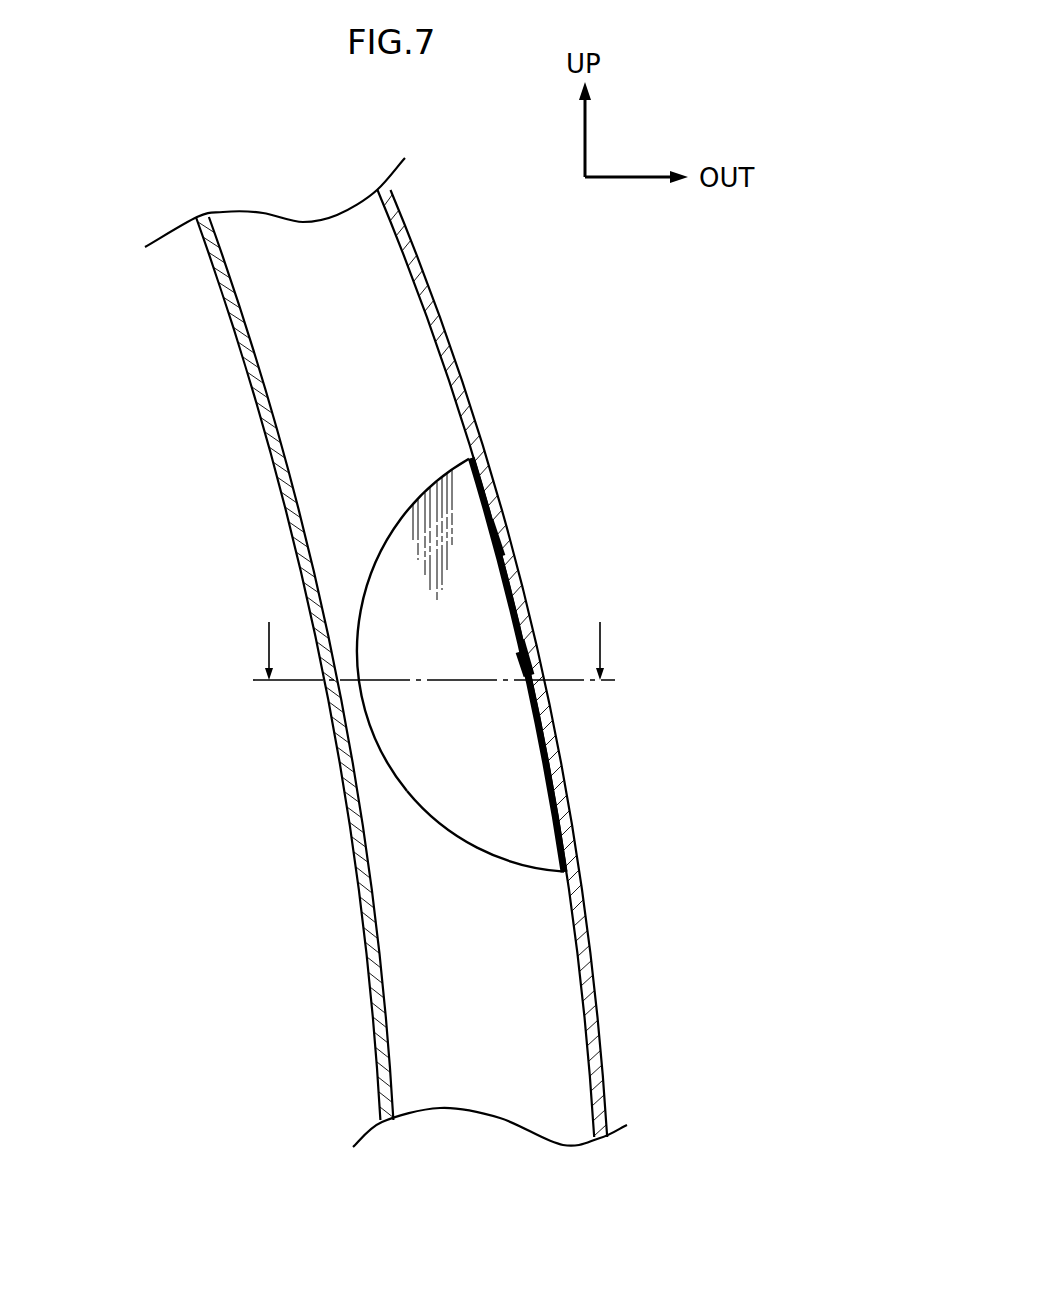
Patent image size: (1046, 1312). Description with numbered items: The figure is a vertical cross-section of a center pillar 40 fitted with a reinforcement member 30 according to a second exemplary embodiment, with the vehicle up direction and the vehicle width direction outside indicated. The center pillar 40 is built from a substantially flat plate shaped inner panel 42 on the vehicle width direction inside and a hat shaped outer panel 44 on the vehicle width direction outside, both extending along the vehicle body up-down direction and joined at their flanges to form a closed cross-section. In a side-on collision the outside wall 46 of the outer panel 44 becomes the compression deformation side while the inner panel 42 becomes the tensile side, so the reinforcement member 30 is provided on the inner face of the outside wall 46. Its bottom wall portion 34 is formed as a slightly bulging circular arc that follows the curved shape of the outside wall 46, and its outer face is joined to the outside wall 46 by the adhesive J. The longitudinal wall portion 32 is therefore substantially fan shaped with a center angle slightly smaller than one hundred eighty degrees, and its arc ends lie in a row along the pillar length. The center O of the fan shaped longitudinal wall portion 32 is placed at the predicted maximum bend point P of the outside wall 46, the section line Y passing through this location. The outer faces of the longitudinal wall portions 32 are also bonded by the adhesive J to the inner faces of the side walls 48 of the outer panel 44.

The reinforcement member 30 is at (393, 526).
The longitudinal wall portion 32 is at (475, 827).
The bottom wall portion 34 is at (470, 458).
The center pillar 40 is at (424, 228).
The inner panel 42 is at (240, 367).
The outer panel 44 is at (452, 324).
The outside wall 46 is at (580, 848).
The side wall 48 is at (296, 242).
The adhesive J is at (502, 538).
The maximum bend point P is at (527, 657).
The center O is at (523, 662).
The section line Y is at (434, 634).